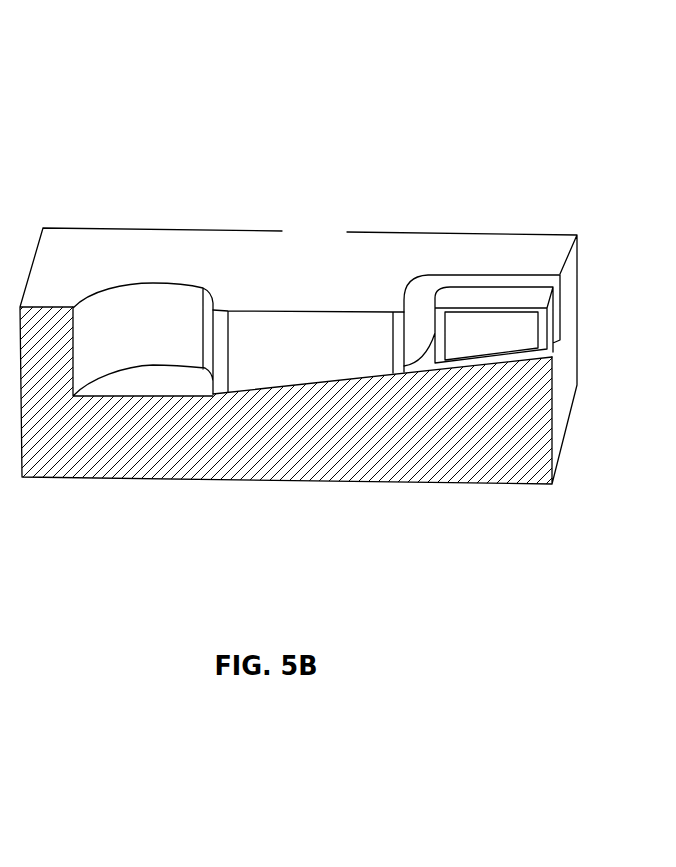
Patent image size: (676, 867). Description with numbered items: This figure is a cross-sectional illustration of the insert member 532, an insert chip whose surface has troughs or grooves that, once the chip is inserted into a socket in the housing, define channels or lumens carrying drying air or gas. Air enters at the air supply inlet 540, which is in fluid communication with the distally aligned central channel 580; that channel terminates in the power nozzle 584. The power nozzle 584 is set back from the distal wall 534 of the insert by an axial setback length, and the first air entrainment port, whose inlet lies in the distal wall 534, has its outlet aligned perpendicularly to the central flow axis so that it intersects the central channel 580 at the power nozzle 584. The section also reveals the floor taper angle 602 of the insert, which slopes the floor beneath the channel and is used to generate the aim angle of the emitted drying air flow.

The insert member 532 is at (382, 145).
The distal wall segment 534 is at (563, 383).
The air supply inlet 540 is at (132, 326).
The central channel 580 is at (488, 358).
The power nozzle 584 is at (235, 300).
The floor taper angle 602 is at (432, 478).